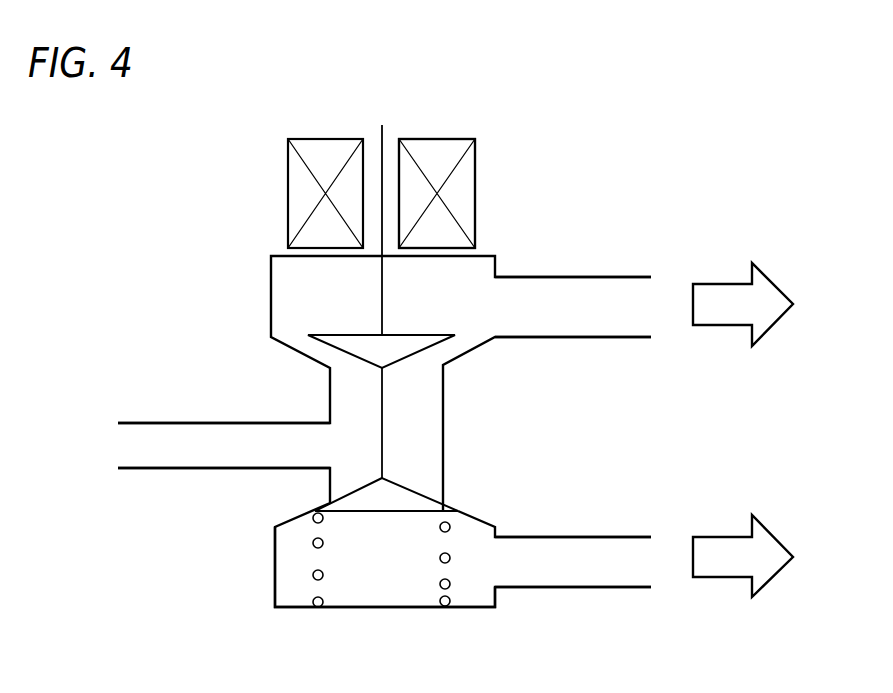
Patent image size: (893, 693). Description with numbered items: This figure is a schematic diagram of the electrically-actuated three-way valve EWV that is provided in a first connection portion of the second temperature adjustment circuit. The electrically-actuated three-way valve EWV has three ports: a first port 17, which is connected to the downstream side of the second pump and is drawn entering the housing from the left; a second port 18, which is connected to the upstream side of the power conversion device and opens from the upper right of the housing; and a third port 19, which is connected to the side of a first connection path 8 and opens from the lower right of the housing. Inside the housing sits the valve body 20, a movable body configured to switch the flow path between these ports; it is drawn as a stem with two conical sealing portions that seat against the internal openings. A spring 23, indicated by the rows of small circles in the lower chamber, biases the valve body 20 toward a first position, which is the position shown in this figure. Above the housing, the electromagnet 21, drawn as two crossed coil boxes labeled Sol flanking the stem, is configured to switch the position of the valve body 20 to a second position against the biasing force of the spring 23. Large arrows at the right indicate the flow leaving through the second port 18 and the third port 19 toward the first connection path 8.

The first connection path 8 is at (598, 572).
The first port 17 is at (258, 432).
The second port 18 is at (508, 308).
The third port 19 is at (488, 570).
The valve body 20 is at (407, 357).
The electromagnet 21 is at (435, 139).
The spring 23 is at (312, 603).
The electrically-actuated three-way valve EWV is at (562, 192).
The solenoid Sol is at (405, 193).